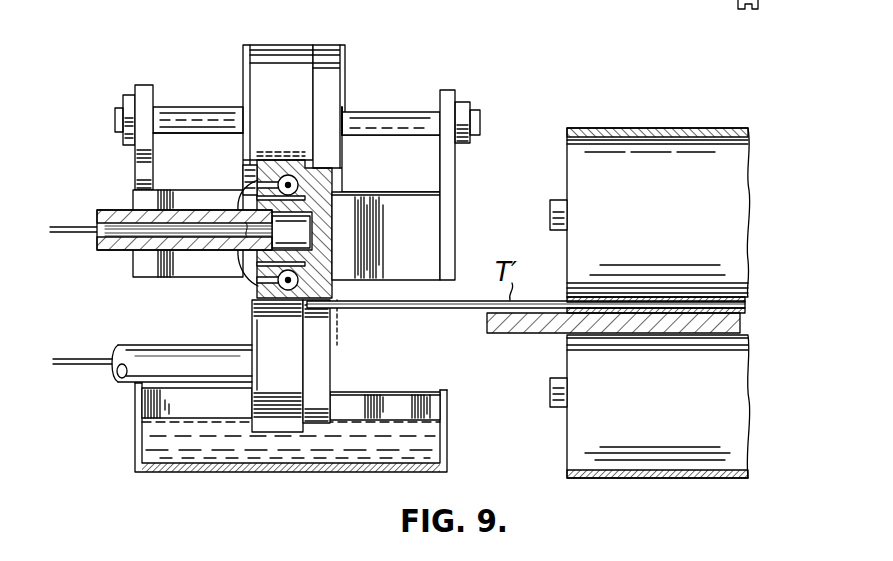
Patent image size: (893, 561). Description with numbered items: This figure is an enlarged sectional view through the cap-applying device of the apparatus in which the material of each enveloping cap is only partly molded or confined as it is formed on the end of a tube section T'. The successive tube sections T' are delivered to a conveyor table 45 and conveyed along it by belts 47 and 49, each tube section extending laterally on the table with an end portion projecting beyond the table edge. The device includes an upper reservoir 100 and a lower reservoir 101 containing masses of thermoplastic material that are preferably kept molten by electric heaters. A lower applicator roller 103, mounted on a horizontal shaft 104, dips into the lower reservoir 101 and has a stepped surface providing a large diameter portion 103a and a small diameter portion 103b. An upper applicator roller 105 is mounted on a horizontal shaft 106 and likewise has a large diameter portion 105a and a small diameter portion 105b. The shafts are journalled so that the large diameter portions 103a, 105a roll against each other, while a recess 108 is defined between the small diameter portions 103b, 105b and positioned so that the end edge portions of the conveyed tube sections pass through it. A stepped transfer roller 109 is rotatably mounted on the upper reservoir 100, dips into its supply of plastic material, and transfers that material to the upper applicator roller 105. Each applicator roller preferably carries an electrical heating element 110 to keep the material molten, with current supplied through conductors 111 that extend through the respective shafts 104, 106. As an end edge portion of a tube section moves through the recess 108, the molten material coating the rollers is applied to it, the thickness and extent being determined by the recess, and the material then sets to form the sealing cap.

The conveyor table 45 is at (546, 334).
The belt 47 is at (560, 477).
The belt 49 is at (737, 130).
The upper reservoir 100 is at (440, 213).
The lower reservoir 101 is at (183, 470).
The lower applicator roller 103 is at (275, 393).
The large diameter portion 103a is at (258, 395).
The small diameter portion 103b is at (320, 372).
The horizontal shaft 104 is at (160, 322).
The upper applicator roller 105 is at (280, 160).
The large diameter portion 105a is at (266, 160).
The small diameter portion 105b is at (318, 167).
The horizontal shaft 106 is at (203, 200).
The recess 108 is at (333, 288).
The transfer roller 109 is at (293, 58).
The electrical heating element 110 is at (343, 170).
The conductor 111 is at (68, 226).